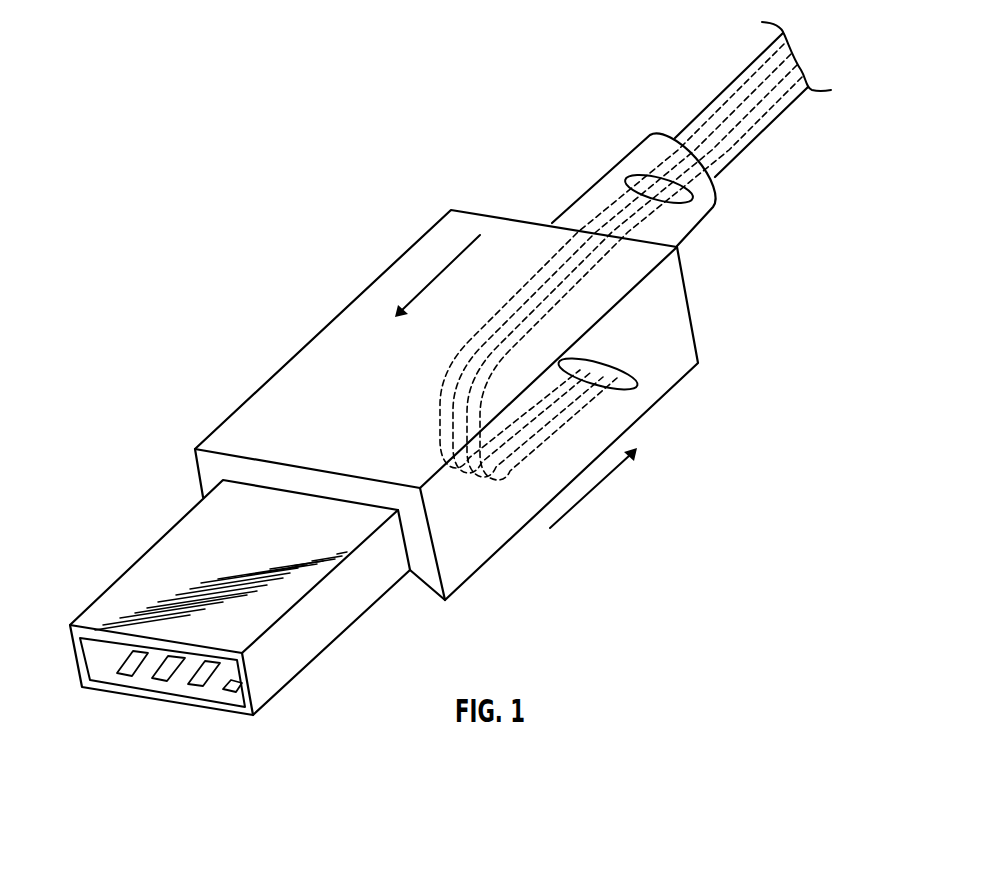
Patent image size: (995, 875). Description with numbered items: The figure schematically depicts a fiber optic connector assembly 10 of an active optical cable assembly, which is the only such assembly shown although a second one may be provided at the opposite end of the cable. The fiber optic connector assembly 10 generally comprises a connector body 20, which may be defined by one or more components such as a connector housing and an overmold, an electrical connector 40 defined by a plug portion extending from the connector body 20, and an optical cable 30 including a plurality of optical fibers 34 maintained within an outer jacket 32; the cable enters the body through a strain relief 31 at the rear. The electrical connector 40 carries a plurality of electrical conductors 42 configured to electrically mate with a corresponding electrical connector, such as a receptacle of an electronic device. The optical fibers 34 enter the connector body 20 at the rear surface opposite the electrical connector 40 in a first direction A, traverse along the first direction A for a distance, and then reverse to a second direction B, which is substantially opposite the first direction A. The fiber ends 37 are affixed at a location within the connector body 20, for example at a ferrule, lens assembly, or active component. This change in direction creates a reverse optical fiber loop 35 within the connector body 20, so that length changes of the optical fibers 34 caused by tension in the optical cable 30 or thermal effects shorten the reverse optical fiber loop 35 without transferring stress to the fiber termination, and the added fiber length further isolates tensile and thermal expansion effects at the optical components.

The fiber optic connector assembly 10 is at (267, 226).
The connector body 20 is at (266, 383).
The optical cable 30 is at (701, 97).
The strain relief 31 is at (600, 182).
The outer jacket 32 is at (767, 130).
The optical fibers 34 is at (697, 201).
The reverse optical fiber loop 35 is at (440, 428).
The fiber ends 37 is at (638, 383).
The electrical connector 40 is at (147, 554).
The electrical conductors 42 is at (228, 691).
The first direction A is at (448, 265).
The second direction B is at (593, 488).